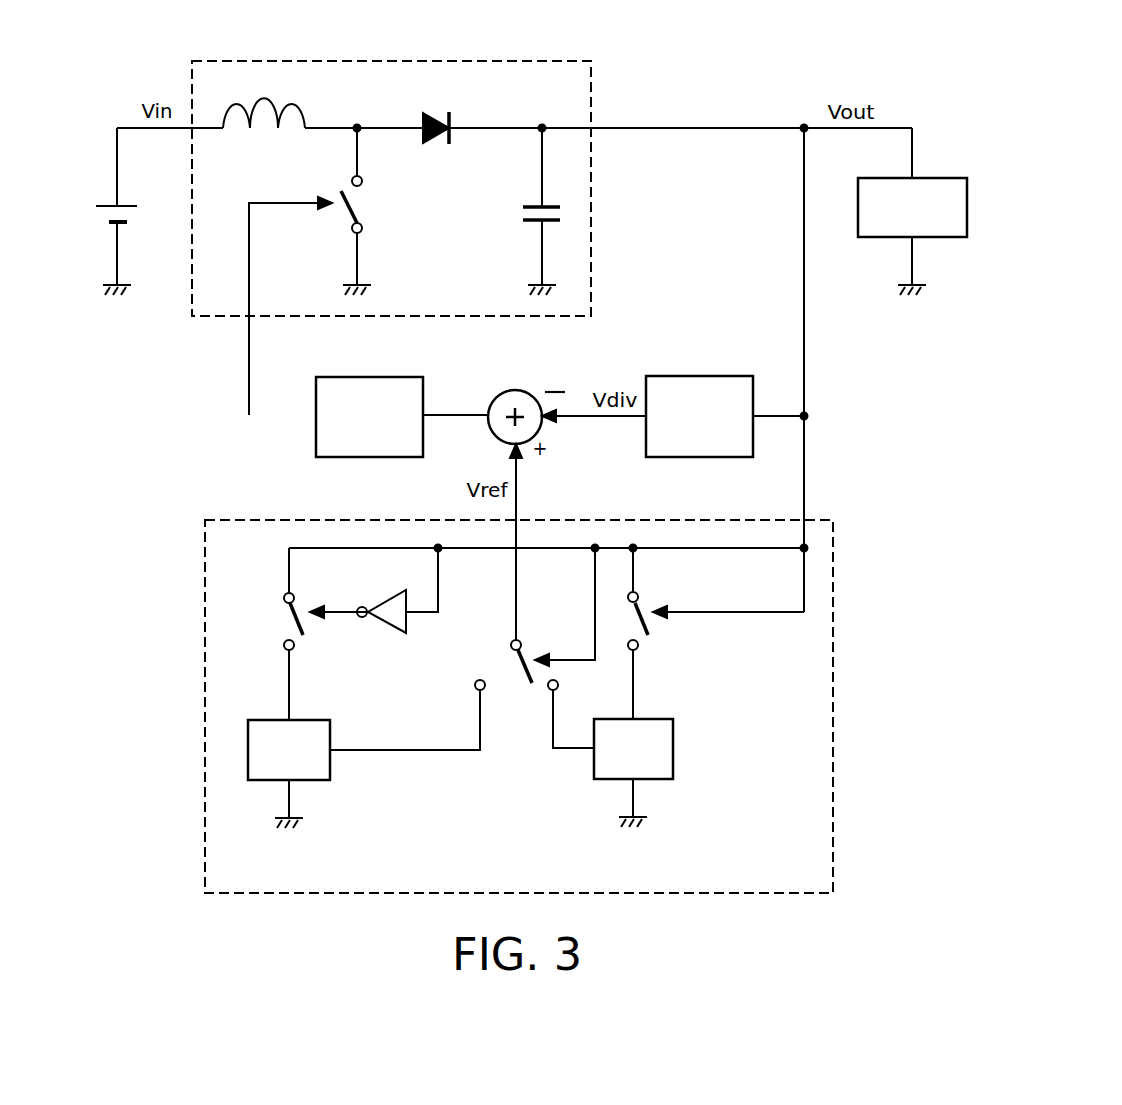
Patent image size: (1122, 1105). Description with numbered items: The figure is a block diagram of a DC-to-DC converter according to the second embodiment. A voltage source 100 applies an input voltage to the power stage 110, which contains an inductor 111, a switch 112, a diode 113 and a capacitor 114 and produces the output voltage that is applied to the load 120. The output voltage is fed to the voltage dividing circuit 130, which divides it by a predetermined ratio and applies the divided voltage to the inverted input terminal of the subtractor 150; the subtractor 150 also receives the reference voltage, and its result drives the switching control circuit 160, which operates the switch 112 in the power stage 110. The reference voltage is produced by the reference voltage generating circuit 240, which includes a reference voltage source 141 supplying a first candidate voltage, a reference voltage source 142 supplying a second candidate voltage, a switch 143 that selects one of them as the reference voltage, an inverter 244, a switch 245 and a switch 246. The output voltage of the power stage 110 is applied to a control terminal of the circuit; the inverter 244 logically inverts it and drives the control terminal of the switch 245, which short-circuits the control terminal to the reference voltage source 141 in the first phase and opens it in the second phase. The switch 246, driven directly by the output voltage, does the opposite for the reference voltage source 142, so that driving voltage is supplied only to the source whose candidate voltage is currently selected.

The voltage source 100 is at (103, 202).
The power stage 110 is at (538, 60).
The inductor 111 is at (310, 113).
The switch 112 is at (340, 213).
The diode 113 is at (435, 143).
The capacitor 114 is at (528, 202).
The load 120 is at (940, 177).
The voltage dividing circuit 130 is at (715, 375).
The reference voltage source 141 is at (265, 717).
The reference voltage source 142 is at (657, 718).
The switch 143 is at (530, 652).
The subtractor 150 is at (493, 392).
The switching control circuit 160 is at (393, 375).
The reference voltage generating circuit 240 is at (242, 518).
The inverter 244 is at (388, 635).
The switch 245 is at (302, 603).
The switch 246 is at (653, 625).